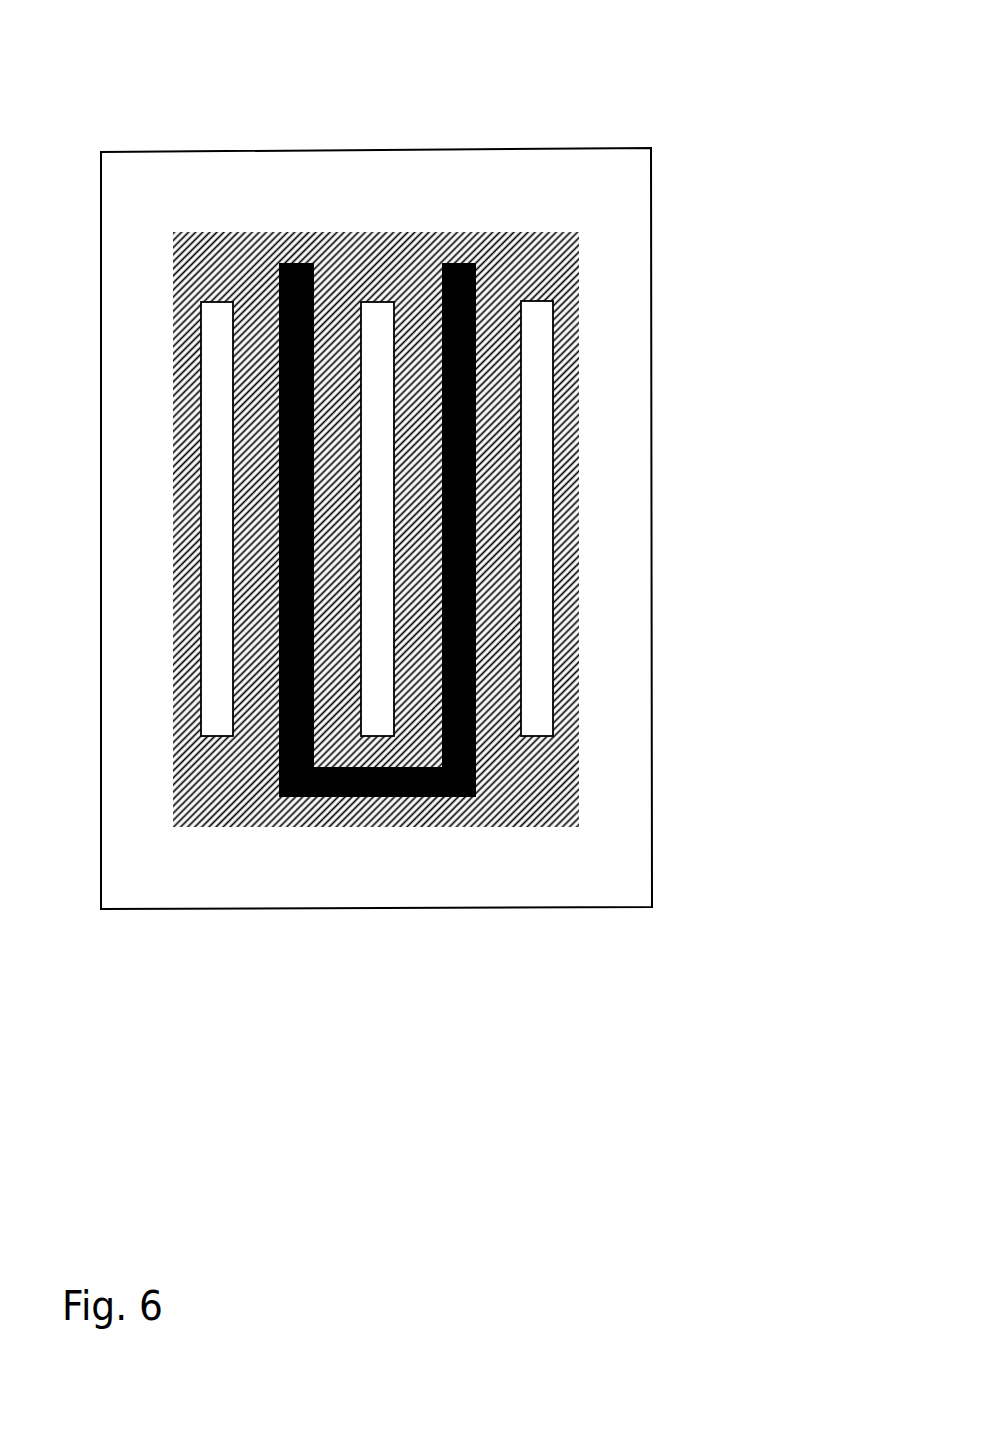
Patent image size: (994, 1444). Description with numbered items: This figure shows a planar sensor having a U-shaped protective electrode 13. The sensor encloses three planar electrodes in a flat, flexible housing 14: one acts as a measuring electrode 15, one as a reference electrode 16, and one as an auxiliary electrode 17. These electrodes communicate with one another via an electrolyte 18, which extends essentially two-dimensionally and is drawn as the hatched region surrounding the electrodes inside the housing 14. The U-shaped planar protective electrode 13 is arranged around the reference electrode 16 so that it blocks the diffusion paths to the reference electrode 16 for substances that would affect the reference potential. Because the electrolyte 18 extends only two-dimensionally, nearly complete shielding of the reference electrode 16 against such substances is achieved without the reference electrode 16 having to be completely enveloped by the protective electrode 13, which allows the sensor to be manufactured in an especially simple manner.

The U-shaped protective electrode 13 is at (400, 797).
The housing 14 is at (613, 190).
The measuring electrode 15 is at (215, 333).
The reference electrode 16 is at (373, 330).
The auxiliary electrode 17 is at (543, 333).
The electrolyte 18 is at (545, 800).